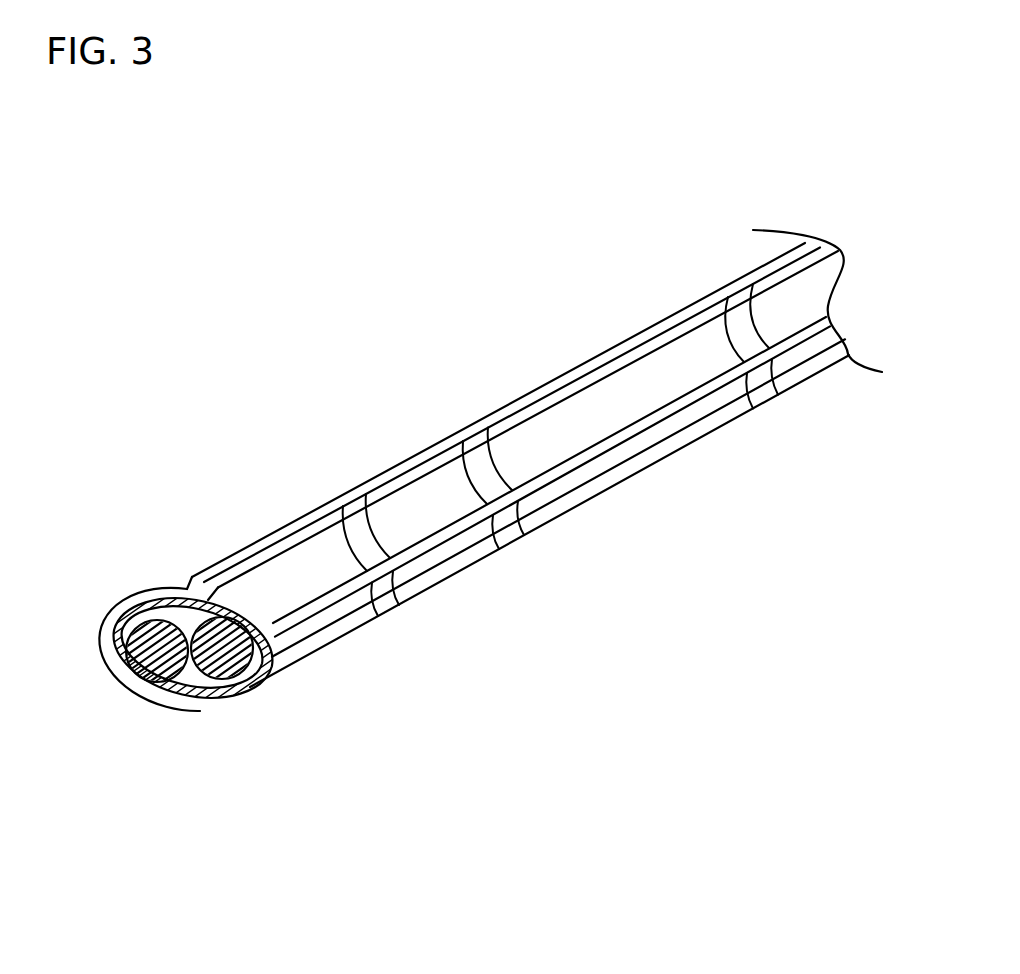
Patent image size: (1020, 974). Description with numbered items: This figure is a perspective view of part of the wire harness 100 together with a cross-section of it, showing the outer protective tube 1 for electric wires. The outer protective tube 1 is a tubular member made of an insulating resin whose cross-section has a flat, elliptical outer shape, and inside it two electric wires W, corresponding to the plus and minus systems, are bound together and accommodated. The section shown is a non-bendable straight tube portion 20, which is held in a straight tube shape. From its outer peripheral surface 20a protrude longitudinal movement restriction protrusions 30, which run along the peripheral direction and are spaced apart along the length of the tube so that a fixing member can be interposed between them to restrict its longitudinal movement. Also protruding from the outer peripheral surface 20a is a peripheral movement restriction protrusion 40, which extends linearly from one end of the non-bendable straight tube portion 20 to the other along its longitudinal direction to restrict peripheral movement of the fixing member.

The outer protective tube 1 is at (390, 321).
The non-bendable straight tube portion 20 is at (471, 403).
The outer peripheral surface 20a is at (647, 388).
The longitudinal movement restriction protrusion 30 is at (478, 460).
The peripheral movement restriction protrusion 40 is at (461, 540).
The wire harness 100 is at (232, 526).
The electric wire W is at (202, 678).